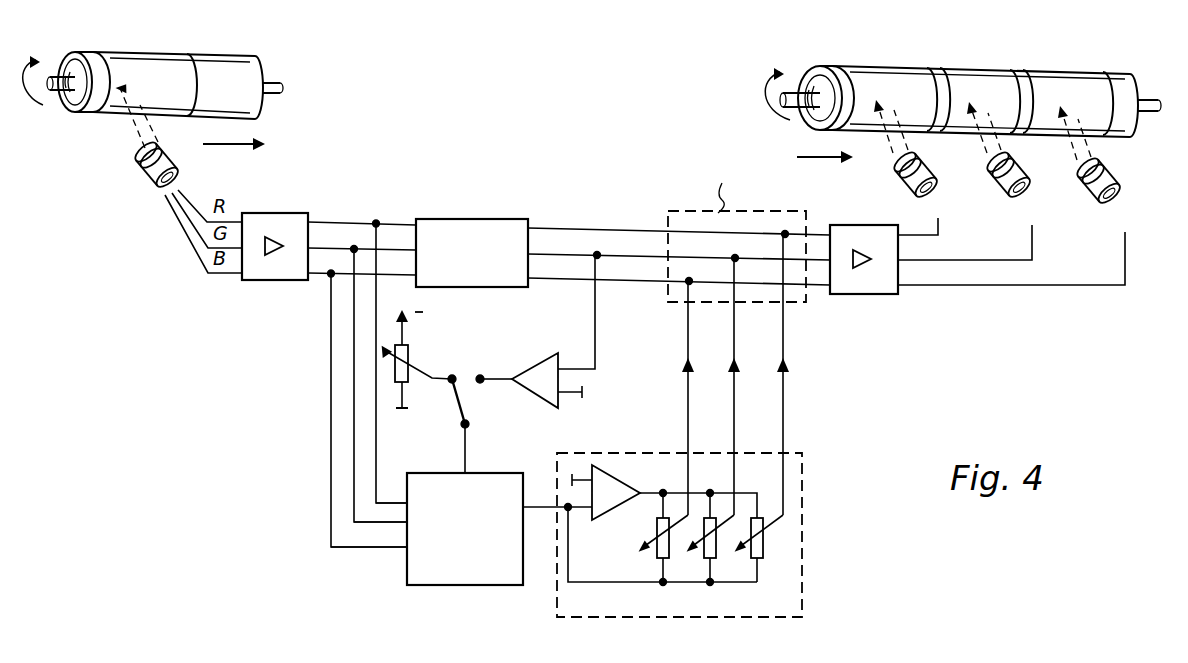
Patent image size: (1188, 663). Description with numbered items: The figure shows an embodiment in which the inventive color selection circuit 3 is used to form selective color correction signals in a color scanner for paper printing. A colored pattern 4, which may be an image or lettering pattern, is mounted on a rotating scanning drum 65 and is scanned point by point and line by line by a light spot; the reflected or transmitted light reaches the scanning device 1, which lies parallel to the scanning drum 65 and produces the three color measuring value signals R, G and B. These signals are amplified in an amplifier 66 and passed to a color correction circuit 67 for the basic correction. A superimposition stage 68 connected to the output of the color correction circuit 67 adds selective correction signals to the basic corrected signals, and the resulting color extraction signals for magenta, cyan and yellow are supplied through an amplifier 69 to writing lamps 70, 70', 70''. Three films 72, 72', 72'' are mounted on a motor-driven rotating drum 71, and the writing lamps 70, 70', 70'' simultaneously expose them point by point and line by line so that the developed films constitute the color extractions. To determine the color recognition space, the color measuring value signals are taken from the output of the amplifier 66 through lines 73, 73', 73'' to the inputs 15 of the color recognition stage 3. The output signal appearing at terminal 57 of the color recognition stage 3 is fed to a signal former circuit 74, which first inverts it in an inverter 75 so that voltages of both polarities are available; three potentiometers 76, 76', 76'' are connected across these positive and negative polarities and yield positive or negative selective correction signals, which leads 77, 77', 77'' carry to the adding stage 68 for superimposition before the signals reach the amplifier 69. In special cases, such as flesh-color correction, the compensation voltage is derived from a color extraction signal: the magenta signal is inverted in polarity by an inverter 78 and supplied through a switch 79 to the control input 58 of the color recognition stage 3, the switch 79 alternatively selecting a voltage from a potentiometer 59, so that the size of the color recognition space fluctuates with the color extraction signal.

The scanning device 1 is at (140, 165).
The colored pattern 4 is at (152, 72).
The scanning drum 65 is at (225, 80).
The amplifier 66 is at (278, 230).
The color correction circuit 67 is at (440, 232).
The superimposition stage 68 is at (668, 213).
The amplifier 69 is at (850, 232).
The writing lamp 70 is at (932, 162).
The writing lamp 70' is at (989, 151).
The writing lamp 70'' is at (1087, 165).
The rotating drum 71 is at (1128, 96).
The film 72 is at (907, 79).
The film 72' is at (998, 79).
The film 72'' is at (1070, 84).
The line 73 is at (343, 410).
The line 73' is at (324, 385).
The line 73'' is at (341, 364).
The signal former circuit 74 is at (787, 548).
The inverter 75 is at (618, 490).
The potentiometer 76 is at (648, 537).
The potentiometer 76' is at (706, 540).
The potentiometer 76'' is at (767, 556).
The lead 77 is at (769, 398).
The lead 77' is at (755, 386).
The lead 77'' is at (816, 374).
The inverter 78 is at (530, 376).
The switch 79 is at (468, 402).
The control input 58 is at (465, 470).
The potentiometer 59 is at (409, 352).
The terminal 57 is at (530, 511).
The input lines 15 is at (406, 529).
The color selection circuit 3 is at (457, 569).